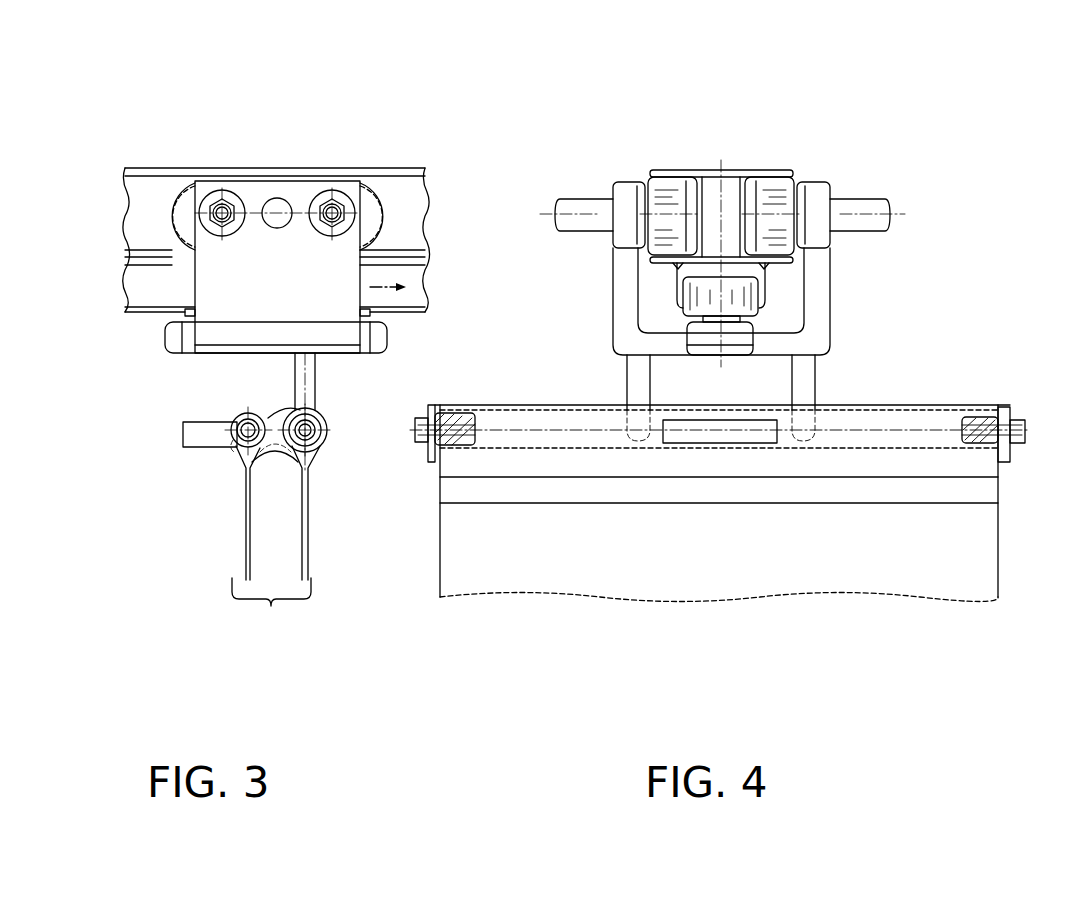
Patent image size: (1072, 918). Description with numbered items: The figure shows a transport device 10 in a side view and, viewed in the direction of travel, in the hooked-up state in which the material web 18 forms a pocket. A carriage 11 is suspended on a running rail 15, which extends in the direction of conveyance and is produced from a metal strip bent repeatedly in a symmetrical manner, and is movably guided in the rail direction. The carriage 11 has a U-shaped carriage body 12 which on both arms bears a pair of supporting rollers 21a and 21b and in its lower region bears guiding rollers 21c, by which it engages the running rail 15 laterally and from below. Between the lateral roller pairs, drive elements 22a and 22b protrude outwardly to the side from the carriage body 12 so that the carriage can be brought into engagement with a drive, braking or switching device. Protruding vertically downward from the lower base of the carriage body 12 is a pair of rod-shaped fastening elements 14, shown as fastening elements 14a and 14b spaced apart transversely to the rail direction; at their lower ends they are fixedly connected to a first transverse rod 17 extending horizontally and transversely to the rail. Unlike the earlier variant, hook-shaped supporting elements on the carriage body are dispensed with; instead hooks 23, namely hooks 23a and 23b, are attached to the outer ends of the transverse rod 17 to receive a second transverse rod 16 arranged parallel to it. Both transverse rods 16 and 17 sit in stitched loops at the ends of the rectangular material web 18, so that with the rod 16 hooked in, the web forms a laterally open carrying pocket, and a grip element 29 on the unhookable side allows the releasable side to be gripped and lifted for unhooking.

In FIG. 4, the transport device 10 is at (502, 360).
In FIG. 3, the carriage 11 is at (166, 367).
In FIG. 4, the carriage 11 is at (818, 153).
In FIG. 3, the carriage body 12 is at (262, 300).
In FIG. 4, the carriage body 12 is at (825, 297).
In FIG. 3, the fastening element 14 is at (308, 372).
In FIG. 4, the fastening element 14a is at (642, 385).
In FIG. 4, the fastening element 14b is at (802, 390).
In FIG. 3, the running rail 15 is at (400, 210).
In FIG. 4, the running rail 15 is at (716, 160).
In FIG. 3, the second transverse rod 16 is at (232, 435).
In FIG. 4, the second transverse rod 16 is at (898, 435).
In FIG. 3, the first transverse rod 17 is at (307, 437).
In FIG. 3, the material web 18 is at (271, 615).
In FIG. 4, the material web 18 is at (487, 573).
In FIG. 4, the supporting roller 21a is at (660, 202).
In FIG. 4, the supporting roller 21b is at (762, 207).
In FIG. 4, the guiding roller 21c is at (700, 297).
In FIG. 3, the drive element 22a is at (277, 210).
In FIG. 4, the drive element 22a is at (573, 213).
In FIG. 4, the drive element 22b is at (857, 222).
In FIG. 3, the hook 23 is at (266, 464).
In FIG. 4, the hook 23a is at (432, 462).
In FIG. 4, the hook 23b is at (1000, 460).
In FIG. 3, the grip element 29 is at (203, 447).
In FIG. 4, the grip element 29 is at (720, 445).